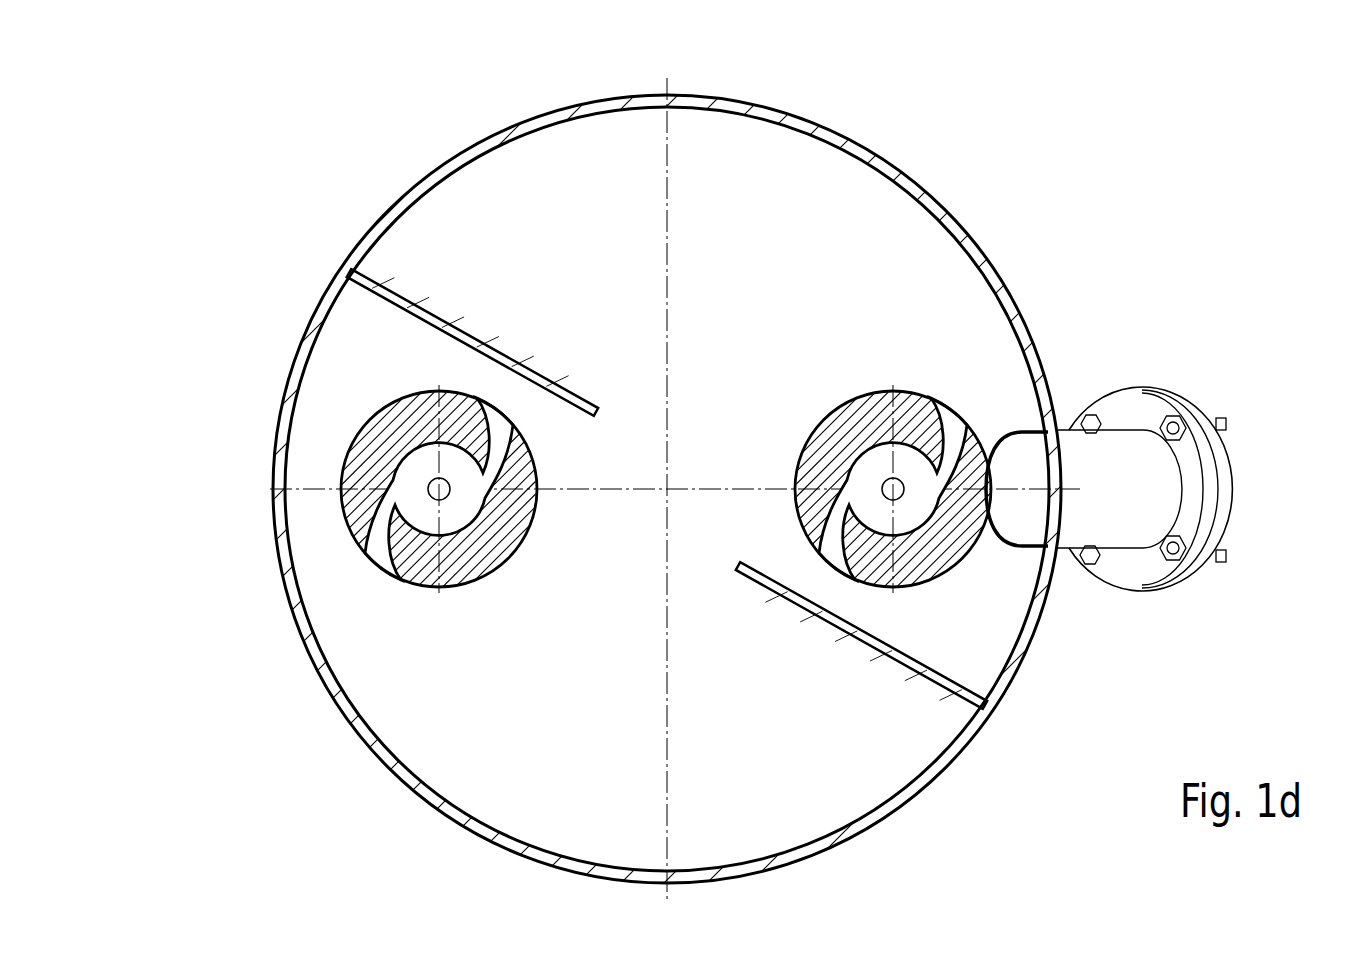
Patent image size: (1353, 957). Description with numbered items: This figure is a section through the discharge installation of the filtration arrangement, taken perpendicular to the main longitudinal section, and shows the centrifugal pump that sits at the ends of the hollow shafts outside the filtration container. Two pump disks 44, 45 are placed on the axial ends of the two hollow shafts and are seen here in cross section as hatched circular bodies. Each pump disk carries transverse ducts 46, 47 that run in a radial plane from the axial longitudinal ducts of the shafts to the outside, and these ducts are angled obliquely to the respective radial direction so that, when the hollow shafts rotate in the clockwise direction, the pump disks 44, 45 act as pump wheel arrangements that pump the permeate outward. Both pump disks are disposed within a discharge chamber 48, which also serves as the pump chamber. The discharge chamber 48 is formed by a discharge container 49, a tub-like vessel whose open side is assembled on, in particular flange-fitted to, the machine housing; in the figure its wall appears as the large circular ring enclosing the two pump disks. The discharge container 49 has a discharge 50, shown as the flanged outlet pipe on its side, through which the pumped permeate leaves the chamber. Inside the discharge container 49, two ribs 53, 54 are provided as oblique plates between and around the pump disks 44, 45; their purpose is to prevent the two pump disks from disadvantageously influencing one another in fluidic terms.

The pump disk 44 is at (917, 410).
The pump disk 45 is at (417, 620).
The transverse duct 46 is at (350, 507).
The transverse duct 47 is at (860, 548).
The discharge chamber 48 is at (890, 244).
The discharge container 49 is at (823, 125).
The discharge 50 is at (1097, 467).
The rib 53 is at (848, 633).
The rib 54 is at (432, 306).